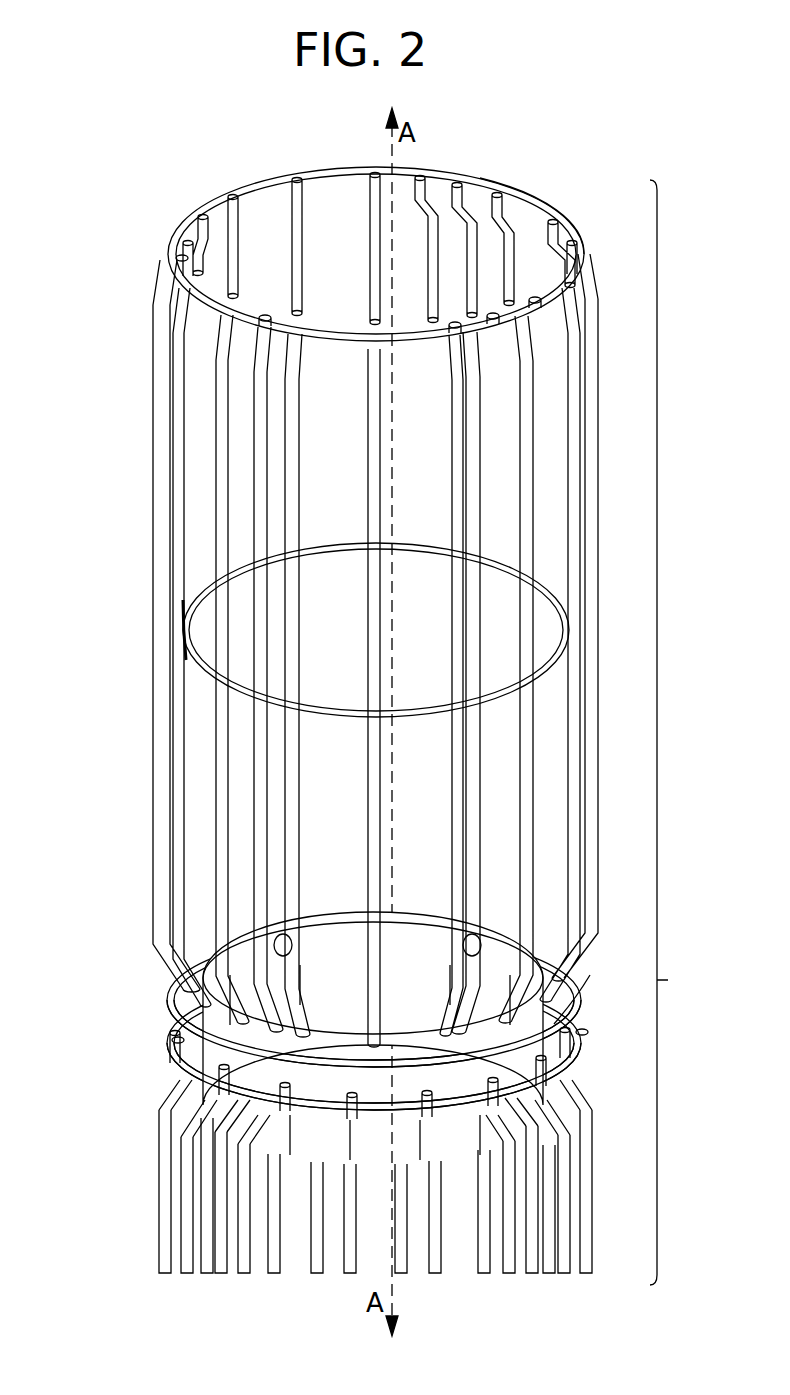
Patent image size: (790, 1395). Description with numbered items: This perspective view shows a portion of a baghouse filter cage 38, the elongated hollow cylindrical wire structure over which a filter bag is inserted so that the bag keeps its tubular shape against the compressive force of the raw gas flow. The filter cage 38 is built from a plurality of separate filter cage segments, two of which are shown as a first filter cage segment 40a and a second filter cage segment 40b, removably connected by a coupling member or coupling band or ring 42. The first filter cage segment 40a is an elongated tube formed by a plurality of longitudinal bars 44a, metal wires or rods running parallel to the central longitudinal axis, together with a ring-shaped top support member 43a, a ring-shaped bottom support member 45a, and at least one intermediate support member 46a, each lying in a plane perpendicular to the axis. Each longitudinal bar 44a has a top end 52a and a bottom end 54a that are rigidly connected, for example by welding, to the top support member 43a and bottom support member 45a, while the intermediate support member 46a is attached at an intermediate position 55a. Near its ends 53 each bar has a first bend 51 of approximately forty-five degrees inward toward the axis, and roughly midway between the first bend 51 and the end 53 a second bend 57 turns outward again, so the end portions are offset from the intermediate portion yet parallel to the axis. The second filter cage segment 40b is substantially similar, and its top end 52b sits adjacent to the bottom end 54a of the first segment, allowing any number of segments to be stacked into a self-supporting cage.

The filter cage 38 is at (677, 732).
The first filter cage segment 40a is at (366, 650).
The second filter cage segment 40b is at (148, 1203).
The coupling member 42 is at (350, 910).
The top support member 43a is at (170, 224).
The longitudinal bars 44a is at (369, 650).
The bottom support member 45a is at (183, 1005).
The intermediate support member 46a is at (183, 655).
The first bend 51 is at (170, 300).
The top end 52a is at (592, 258).
The top end 52b is at (594, 1073).
The ends 53 is at (296, 182).
The bottom end 54a is at (600, 980).
The intermediate position 55a is at (140, 596).
The second bend 57 is at (183, 258).